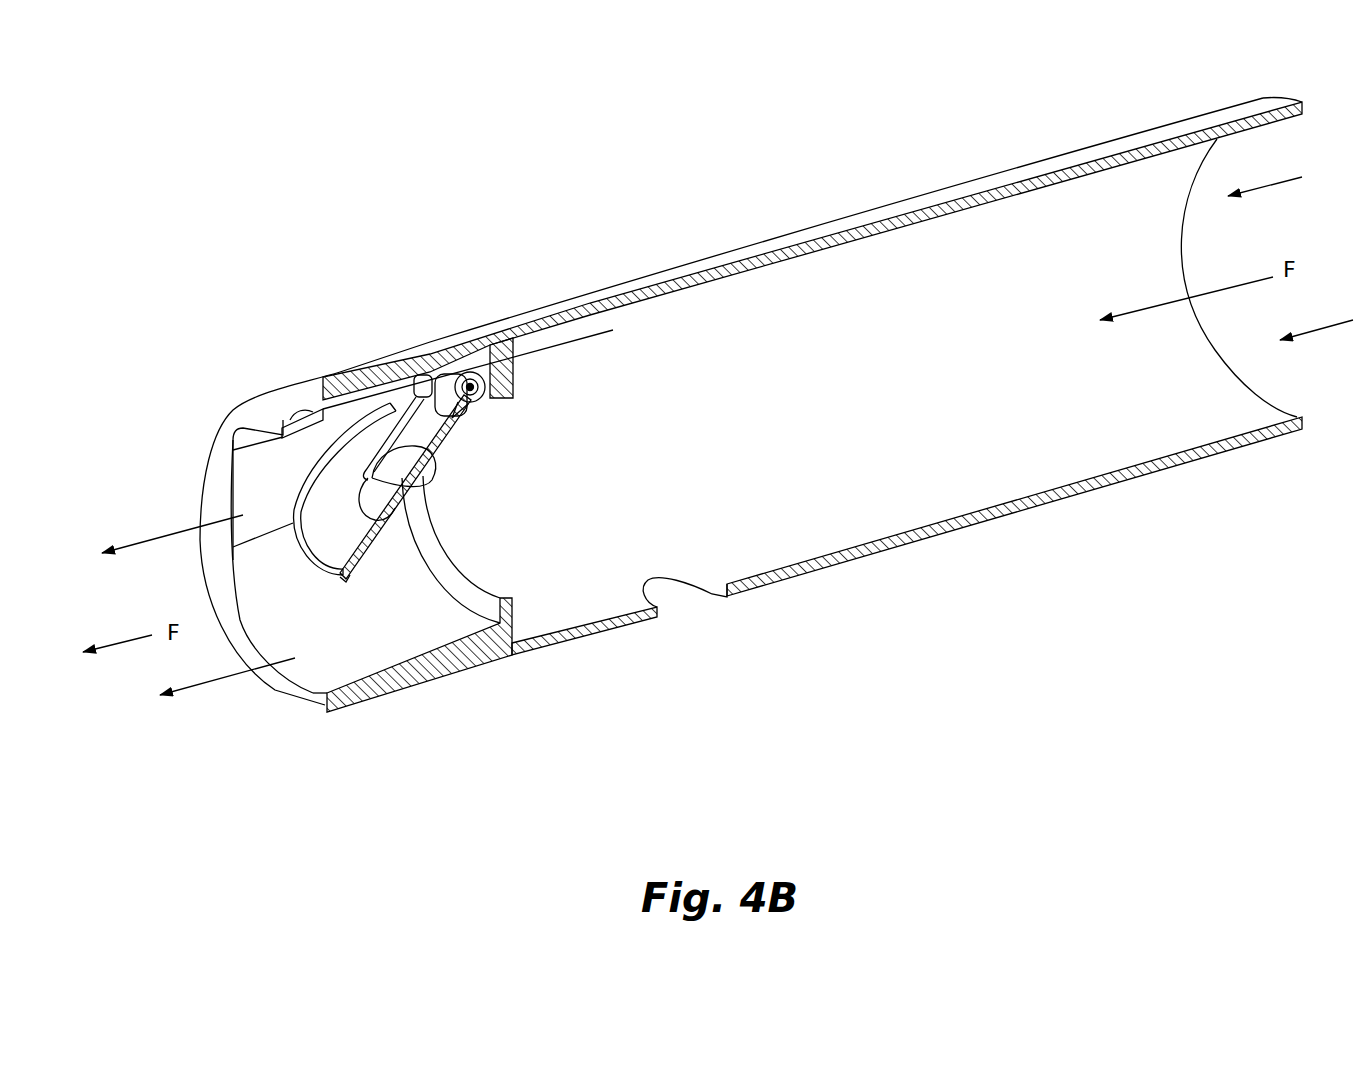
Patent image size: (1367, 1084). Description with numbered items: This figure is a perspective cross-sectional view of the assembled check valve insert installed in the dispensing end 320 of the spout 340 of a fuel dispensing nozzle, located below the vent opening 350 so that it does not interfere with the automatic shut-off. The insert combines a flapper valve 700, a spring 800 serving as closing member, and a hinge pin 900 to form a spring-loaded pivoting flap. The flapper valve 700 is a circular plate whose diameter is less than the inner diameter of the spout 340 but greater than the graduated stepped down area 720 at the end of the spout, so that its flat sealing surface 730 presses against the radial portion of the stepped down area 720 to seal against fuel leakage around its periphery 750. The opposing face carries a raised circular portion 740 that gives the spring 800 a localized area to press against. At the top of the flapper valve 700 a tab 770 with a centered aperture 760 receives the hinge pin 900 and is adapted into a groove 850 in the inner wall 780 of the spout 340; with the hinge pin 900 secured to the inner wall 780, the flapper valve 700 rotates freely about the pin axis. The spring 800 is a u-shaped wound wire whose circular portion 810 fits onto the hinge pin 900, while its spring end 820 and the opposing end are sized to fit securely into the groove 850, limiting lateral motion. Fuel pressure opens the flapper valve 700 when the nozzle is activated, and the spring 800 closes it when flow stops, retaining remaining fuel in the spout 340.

The dispensing end of the spout 320 is at (313, 704).
The spout 340 is at (884, 375).
The vent opening 350 is at (668, 590).
The flapper valve 700 is at (341, 498).
The graduated stepped down area 720 is at (499, 582).
The flat sealing surface 730 is at (358, 565).
The raised circular portion 740 is at (399, 464).
The periphery of the flapper valve 750 is at (320, 576).
The aperture 760 is at (487, 386).
The tab 770 is at (474, 400).
The inner wall of the spout 780 is at (233, 470).
The spring 800 is at (386, 418).
The circular portion of the spring 810 is at (420, 376).
The spring end 820 is at (410, 483).
The groove 850 is at (292, 421).
The hinge pin 900 is at (613, 330).